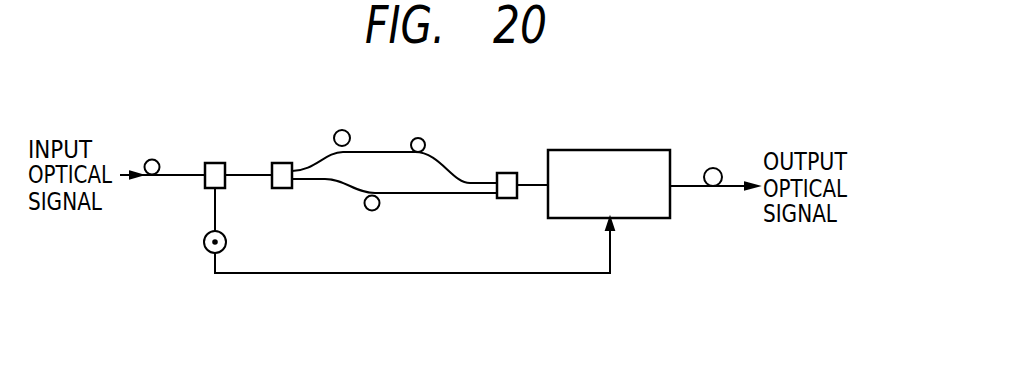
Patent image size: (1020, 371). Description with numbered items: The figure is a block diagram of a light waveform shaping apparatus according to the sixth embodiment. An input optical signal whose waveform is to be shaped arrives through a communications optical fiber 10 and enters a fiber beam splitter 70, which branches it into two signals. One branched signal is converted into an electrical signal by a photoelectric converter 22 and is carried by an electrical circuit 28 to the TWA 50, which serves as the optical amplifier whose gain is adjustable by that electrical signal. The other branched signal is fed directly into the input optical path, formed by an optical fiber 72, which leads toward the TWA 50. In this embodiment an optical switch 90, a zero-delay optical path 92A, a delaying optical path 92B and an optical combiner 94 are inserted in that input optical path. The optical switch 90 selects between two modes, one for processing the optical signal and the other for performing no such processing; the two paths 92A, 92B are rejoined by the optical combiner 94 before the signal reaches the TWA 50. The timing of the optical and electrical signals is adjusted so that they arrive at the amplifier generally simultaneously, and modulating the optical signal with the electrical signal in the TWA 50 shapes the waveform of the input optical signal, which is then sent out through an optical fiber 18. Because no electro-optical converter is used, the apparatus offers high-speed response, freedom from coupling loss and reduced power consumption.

The optical fiber 10 is at (150, 157).
The fiber beam splitter 70 is at (213, 163).
The optical fiber 72 is at (244, 175).
The optical switch 90 is at (282, 163).
The zero-delay optical path 92A is at (386, 206).
The optical path 92B is at (411, 139).
The optical combiner 94 is at (508, 173).
The TWA 50 is at (643, 150).
The optical fiber 18 is at (718, 167).
The photoelectric converter 22 is at (205, 253).
The electrical circuit 28 is at (420, 275).